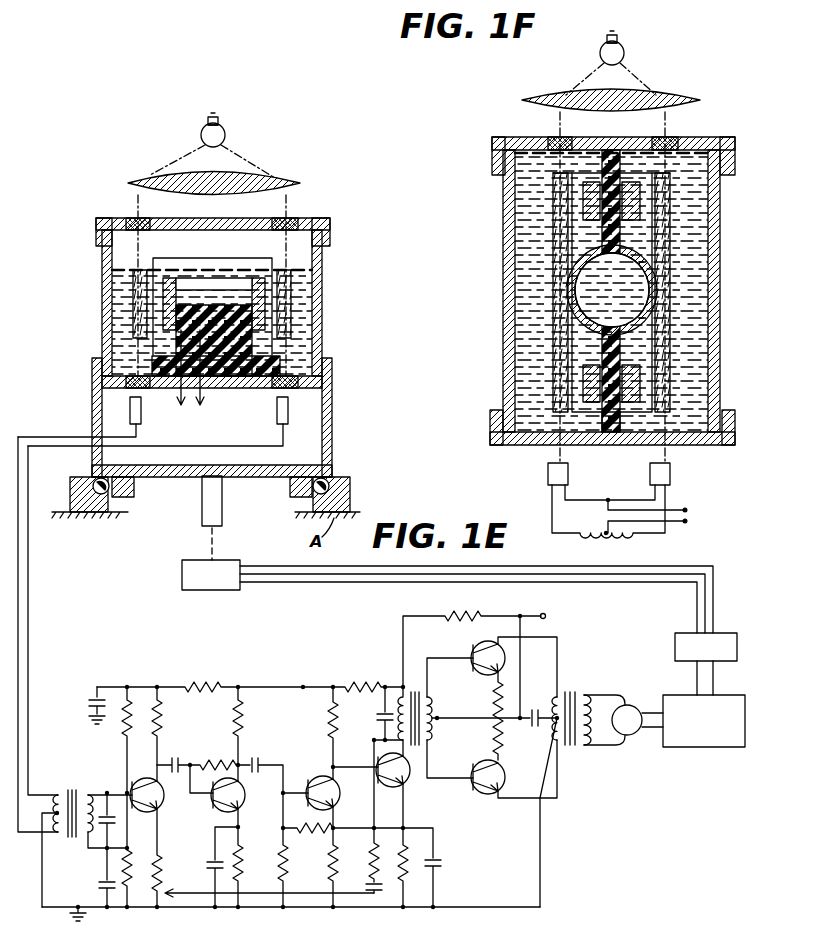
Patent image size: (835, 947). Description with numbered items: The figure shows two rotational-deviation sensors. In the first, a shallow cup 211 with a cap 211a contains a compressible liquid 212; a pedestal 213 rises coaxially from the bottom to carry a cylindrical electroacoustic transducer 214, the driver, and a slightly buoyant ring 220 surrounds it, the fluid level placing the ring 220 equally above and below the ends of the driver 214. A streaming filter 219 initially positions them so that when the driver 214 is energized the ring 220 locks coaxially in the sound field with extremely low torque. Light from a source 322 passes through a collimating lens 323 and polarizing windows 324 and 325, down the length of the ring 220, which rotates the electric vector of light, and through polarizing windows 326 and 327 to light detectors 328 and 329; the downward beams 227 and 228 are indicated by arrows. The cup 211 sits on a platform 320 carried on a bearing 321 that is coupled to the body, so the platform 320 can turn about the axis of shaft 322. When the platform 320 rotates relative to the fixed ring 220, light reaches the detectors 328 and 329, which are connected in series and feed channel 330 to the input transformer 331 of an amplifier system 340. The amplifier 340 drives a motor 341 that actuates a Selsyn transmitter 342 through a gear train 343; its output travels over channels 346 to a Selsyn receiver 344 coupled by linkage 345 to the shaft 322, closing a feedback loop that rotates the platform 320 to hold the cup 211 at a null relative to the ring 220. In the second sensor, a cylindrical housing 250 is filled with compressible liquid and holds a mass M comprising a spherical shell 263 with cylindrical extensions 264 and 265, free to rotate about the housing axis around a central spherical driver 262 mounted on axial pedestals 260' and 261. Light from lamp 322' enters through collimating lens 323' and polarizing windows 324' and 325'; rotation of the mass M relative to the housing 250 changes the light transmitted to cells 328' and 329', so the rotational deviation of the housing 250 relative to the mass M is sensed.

In FIG. 1E, the light source 322 is at (215, 319).
In FIG. 1E, the collimating lens 323 is at (235, 259).
In FIG. 1E, the polarizing window 324 is at (111, 207).
In FIG. 1E, the polarizing window 325 is at (308, 207).
In FIG. 1E, the cap 211a is at (330, 226).
In FIG. 1E, the streaming filter 219 is at (112, 275).
In FIG. 1E, the pedestal 213 is at (190, 310).
In FIG. 1E, the electroacoustic transducer 214 is at (252, 292).
In FIG. 1E, the compressible liquid 212 is at (300, 283).
In FIG. 1E, the ring 220 is at (300, 303).
In FIG. 1E, the cup 211 is at (322, 322).
In FIG. 1E, the polarizing window 326 is at (100, 356).
In FIG. 1E, the polarizing window 327 is at (325, 378).
In FIG. 1E, the platform 320 is at (332, 400).
In FIG. 1E, the light detector 328 is at (79, 415).
In FIG. 1E, the light detector 329 is at (205, 421).
In FIG. 1E, the light beam 227 is at (206, 402).
In FIG. 1E, the light beam 228 is at (183, 403).
In FIG. 1E, the bearing 321 is at (330, 480).
In FIG. 1E, the linkage 345 is at (215, 542).
In FIG. 1E, the Selsyn receiver 344 is at (232, 590).
In FIG. 1E, the channels 346 is at (500, 598).
In FIG. 1E, the Selsyn transmitter 342 is at (742, 634).
In FIG. 1E, the gear train 343 is at (683, 747).
In FIG. 1E, the motor 341 is at (630, 737).
In FIG. 1E, the channel 330 is at (30, 642).
In FIG. 1E, the input transformer 331 is at (57, 792).
In FIG. 1E, the amplifier system 340 is at (247, 671).
In FIG. 1F, the lamp 322' is at (627, 63).
In FIG. 1F, the collimating lens 323' is at (611, 263).
In FIG. 1F, the polarizing window 324' is at (523, 130).
In FIG. 1F, the polarizing window 325' is at (707, 129).
In FIG. 1F, the housing 250 is at (720, 285).
In FIG. 1F, the cylindrical extension 264 is at (553, 208).
In FIG. 1F, the spherical shell 263 is at (584, 248).
In FIG. 1F, the pedestal 260' is at (586, 275).
In FIG. 1F, the cylindrical extension 265 is at (555, 380).
In FIG. 1F, the spherical driver 262 is at (590, 268).
In FIG. 1F, the mass M is at (669, 252).
In FIG. 1F, the insulating boss 261 is at (620, 422).
In FIG. 1F, the cell 328' is at (618, 500).
In FIG. 1F, the cell 329' is at (689, 474).